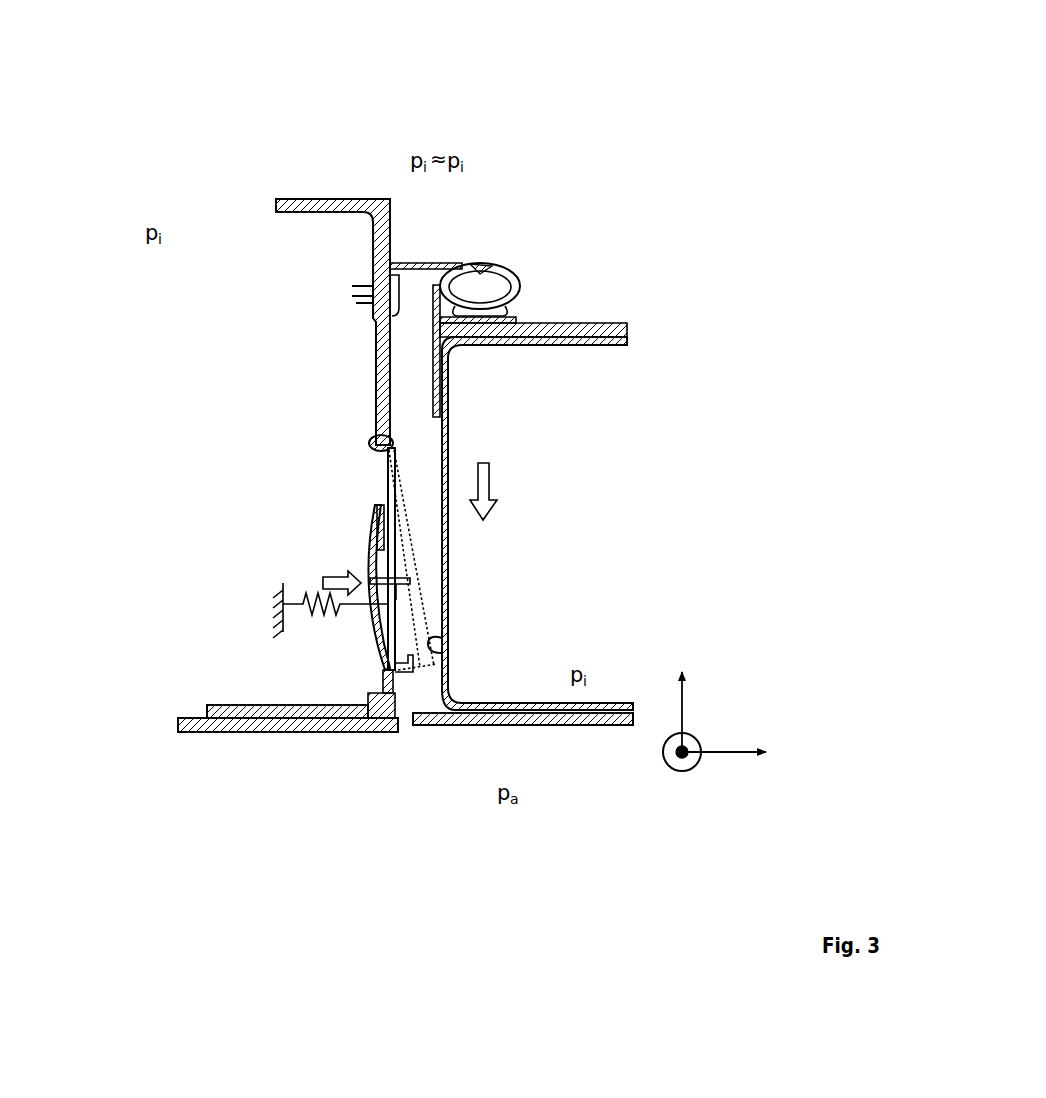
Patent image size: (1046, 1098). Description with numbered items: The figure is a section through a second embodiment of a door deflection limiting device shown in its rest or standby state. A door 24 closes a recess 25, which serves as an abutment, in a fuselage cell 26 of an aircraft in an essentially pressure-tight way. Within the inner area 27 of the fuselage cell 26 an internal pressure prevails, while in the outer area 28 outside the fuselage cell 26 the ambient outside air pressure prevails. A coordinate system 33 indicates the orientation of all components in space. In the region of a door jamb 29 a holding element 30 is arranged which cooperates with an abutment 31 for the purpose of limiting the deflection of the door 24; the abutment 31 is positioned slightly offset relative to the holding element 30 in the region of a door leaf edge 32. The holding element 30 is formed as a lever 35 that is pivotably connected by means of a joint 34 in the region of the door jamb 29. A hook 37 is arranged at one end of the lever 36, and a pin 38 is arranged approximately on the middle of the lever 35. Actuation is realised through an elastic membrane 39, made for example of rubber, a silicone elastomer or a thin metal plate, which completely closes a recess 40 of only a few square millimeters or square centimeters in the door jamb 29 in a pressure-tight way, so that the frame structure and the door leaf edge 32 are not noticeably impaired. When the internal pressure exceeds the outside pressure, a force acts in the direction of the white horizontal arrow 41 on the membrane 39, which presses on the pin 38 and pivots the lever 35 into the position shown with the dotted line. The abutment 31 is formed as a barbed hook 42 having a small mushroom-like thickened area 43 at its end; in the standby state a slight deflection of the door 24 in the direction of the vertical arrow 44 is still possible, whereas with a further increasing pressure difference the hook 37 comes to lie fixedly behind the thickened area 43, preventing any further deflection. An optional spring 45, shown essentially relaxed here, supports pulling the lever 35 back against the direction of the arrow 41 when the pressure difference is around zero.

The door 24 is at (601, 323).
The recess 25 is at (575, 266).
The fuselage cell 26 is at (420, 75).
The inner area 27 is at (311, 266).
The outer area 28 is at (408, 859).
The door jamb 29 is at (375, 358).
The holding element 30 is at (342, 481).
The abutment 31 is at (432, 614).
The door leaf edge 32 is at (446, 424).
The coordinate system 33 is at (685, 740).
The joint 34 is at (371, 440).
The lever 35 is at (377, 505).
The lever 36 is at (393, 653).
The hook 37 is at (385, 678).
The pin 38 is at (380, 561).
The elastic membrane 39 is at (377, 632).
The recess 40 is at (372, 556).
The horizontal arrow 41 is at (323, 582).
The barbed hook 42 is at (445, 625).
The mushroom-like thickened area 43 is at (450, 663).
The vertical arrow 44 is at (485, 487).
The spring 45 is at (273, 603).